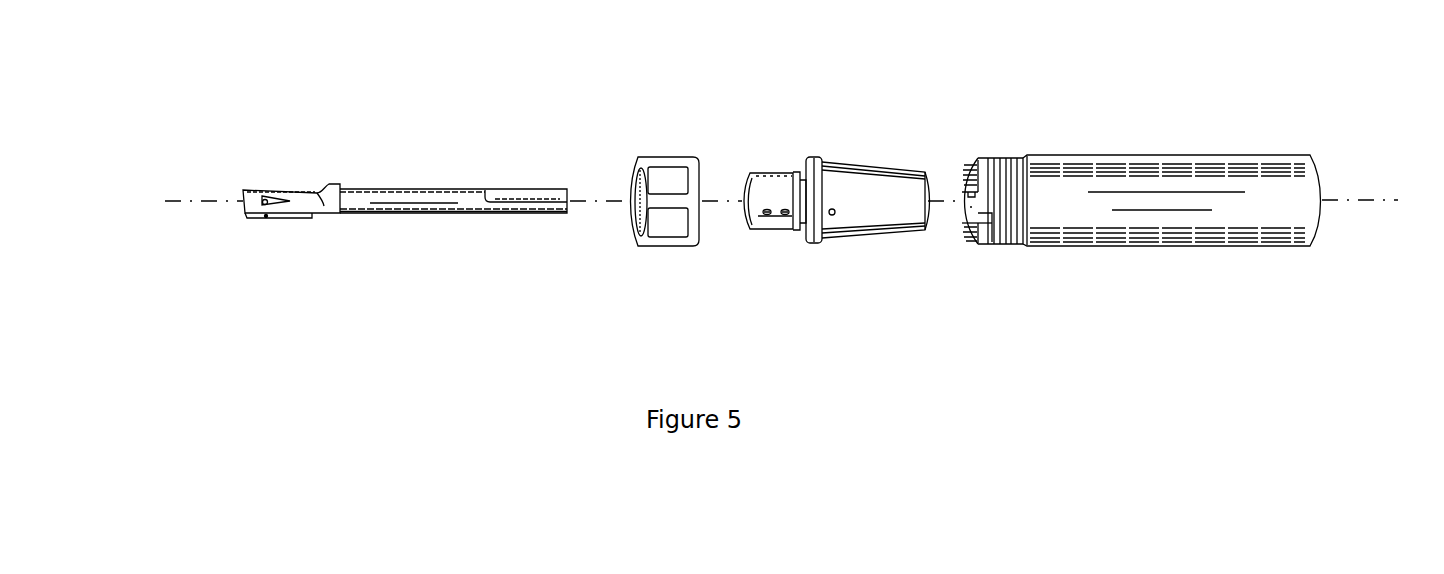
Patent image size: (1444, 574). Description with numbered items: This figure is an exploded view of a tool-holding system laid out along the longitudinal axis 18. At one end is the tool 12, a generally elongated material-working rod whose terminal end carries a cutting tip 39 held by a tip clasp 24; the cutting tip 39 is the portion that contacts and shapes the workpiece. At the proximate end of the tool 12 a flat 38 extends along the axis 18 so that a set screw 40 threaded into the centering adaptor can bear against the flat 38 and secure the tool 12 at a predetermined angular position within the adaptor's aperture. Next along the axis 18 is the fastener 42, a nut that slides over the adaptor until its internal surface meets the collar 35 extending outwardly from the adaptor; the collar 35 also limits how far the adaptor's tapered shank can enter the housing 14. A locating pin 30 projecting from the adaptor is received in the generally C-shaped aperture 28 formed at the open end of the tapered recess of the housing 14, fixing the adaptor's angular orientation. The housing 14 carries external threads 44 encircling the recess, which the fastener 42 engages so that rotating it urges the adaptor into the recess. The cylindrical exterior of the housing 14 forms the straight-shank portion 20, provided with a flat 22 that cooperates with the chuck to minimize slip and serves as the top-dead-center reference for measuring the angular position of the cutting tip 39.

The tool 12 is at (387, 189).
The housing 14 is at (1203, 247).
The longitudinal axis 18 is at (786, 200).
The straight-shank portion 20 is at (1172, 199).
The flat 22 is at (1152, 163).
The tip clasp 24 is at (301, 199).
The aperture 28 is at (993, 244).
The locating pin 30 is at (832, 216).
The collar 35 is at (816, 157).
The flat 38 is at (542, 189).
The cutting tip 39 is at (243, 216).
The set screw 40 is at (765, 172).
The fastener 42 is at (664, 165).
The external threads 44 is at (1005, 158).